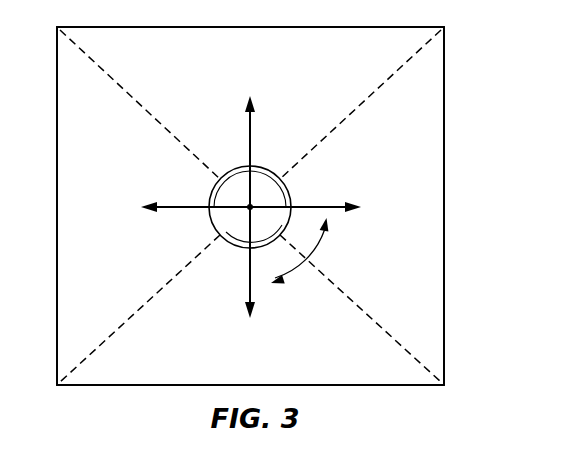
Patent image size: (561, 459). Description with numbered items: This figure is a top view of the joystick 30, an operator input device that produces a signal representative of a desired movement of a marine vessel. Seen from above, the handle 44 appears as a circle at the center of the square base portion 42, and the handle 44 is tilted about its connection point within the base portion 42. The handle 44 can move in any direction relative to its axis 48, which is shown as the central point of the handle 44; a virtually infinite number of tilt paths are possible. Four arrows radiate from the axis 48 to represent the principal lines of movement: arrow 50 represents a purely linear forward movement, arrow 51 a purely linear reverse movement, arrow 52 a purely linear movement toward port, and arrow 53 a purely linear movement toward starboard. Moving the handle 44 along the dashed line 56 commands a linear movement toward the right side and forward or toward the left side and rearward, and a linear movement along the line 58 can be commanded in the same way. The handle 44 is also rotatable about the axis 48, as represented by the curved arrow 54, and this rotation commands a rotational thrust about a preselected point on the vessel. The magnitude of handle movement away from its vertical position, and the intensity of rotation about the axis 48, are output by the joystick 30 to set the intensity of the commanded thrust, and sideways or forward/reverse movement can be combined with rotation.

The joystick 30 is at (460, 76).
The base portion 42 is at (422, 205).
The handle 44 is at (277, 192).
The axis 48 is at (249, 208).
The arrow 50 is at (252, 135).
The arrow 51 is at (245, 283).
The arrow 52 is at (173, 203).
The arrow 53 is at (329, 204).
The arrow 54 is at (311, 258).
The dashed line 56 is at (382, 100).
The line 58 is at (133, 87).